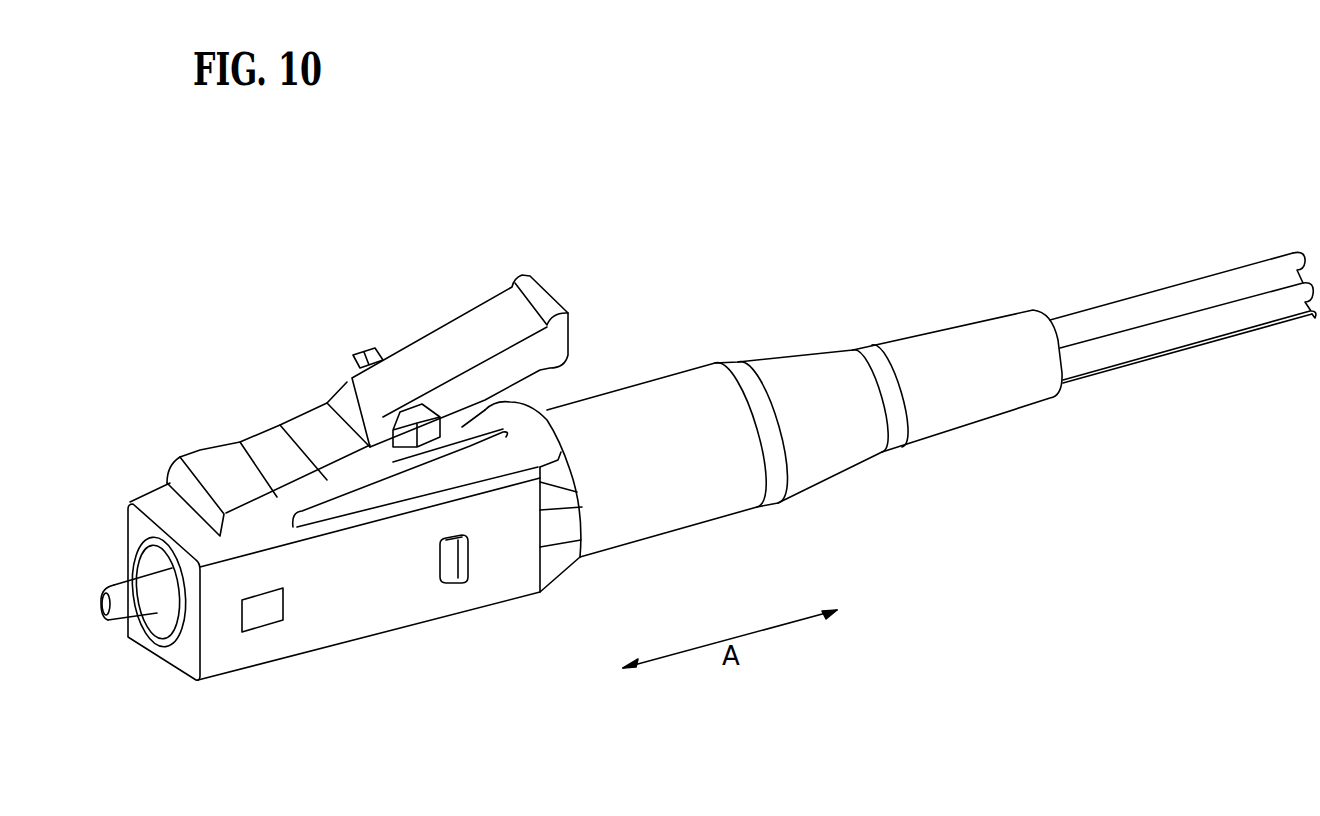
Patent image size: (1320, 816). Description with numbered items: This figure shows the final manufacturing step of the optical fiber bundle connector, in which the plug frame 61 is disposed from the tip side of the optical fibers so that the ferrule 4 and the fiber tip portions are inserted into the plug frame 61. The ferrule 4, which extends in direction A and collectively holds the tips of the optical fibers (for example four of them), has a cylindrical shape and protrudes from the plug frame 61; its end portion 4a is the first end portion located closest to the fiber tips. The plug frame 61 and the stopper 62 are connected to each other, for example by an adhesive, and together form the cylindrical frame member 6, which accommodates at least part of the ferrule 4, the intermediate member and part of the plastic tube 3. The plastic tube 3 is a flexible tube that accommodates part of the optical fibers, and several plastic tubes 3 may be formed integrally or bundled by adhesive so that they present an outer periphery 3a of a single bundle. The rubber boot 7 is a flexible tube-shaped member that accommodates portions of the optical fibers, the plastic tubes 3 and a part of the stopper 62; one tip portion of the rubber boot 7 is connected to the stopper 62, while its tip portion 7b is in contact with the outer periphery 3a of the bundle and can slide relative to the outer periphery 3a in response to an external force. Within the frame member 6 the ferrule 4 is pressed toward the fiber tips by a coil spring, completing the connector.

The plastic tube 3 is at (1183, 317).
The outer periphery 3a is at (1153, 347).
The ferrule 4 is at (130, 638).
The end portion 4a is at (102, 613).
The frame member 6 is at (354, 511).
The plug frame 61 is at (417, 615).
The stopper 62 is at (553, 575).
The rubber boot 7 is at (773, 407).
The tip portion 7b is at (1047, 400).